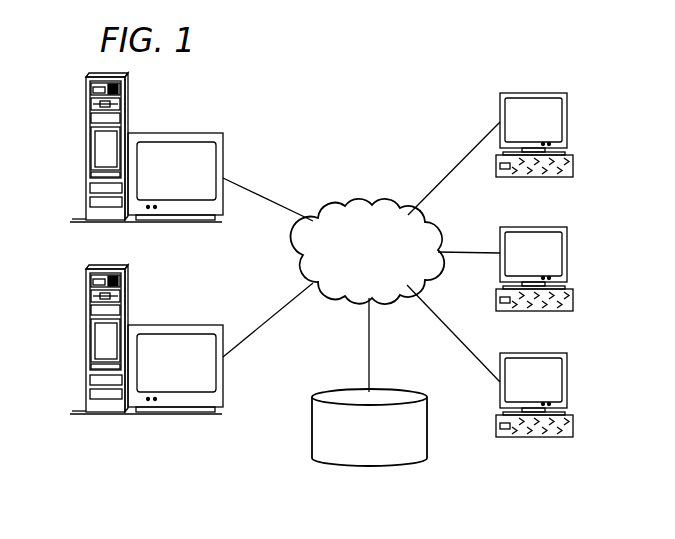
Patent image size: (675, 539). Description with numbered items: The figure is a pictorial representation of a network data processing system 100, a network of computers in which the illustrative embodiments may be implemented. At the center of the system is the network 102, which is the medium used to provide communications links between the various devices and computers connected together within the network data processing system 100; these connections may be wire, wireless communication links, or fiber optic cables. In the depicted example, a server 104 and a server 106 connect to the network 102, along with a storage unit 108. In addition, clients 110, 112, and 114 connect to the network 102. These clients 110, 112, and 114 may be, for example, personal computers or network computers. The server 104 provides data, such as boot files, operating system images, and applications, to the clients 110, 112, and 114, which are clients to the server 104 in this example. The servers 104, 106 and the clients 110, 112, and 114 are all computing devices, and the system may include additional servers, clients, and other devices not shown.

The network data processing system 100 is at (418, 101).
The network 102 is at (343, 207).
The server 104 is at (86, 149).
The server 106 is at (86, 341).
The storage unit 108 is at (355, 466).
The client 110 is at (567, 120).
The client 112 is at (567, 253).
The client 114 is at (567, 382).